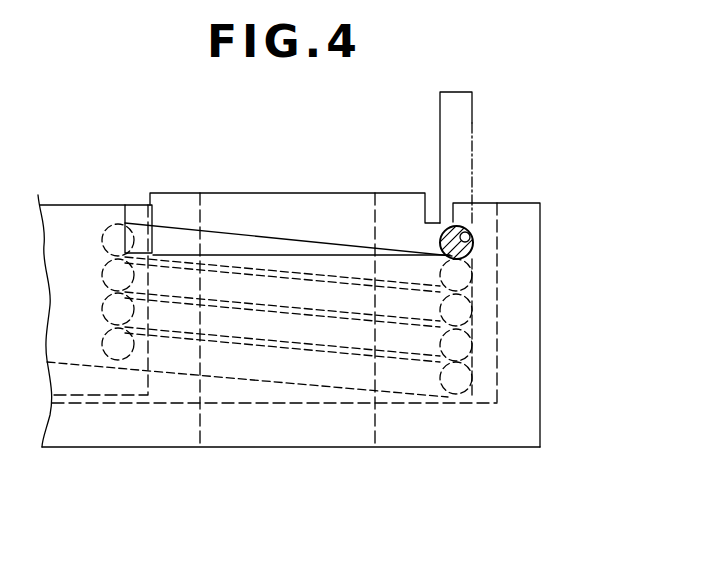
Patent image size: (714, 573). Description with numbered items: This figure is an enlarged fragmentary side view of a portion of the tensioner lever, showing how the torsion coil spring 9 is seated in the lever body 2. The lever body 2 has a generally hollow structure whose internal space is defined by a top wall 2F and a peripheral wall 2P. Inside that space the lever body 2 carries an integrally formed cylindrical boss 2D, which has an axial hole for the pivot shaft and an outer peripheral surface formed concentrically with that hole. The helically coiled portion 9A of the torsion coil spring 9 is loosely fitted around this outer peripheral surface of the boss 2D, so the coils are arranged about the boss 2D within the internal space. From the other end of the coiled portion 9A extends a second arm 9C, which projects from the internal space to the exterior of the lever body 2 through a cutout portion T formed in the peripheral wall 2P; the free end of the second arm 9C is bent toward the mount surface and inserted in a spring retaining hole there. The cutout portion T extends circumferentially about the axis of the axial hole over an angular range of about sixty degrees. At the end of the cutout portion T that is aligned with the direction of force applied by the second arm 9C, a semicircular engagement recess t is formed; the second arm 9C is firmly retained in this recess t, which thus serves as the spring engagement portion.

The lever body 2 is at (540, 400).
The cylindrical boss 2D is at (183, 193).
The top wall 2F is at (187, 432).
The peripheral wall 2P is at (520, 356).
The torsion coil spring 9 is at (470, 259).
The helically coiled portion 9A is at (470, 311).
The second arm 9C is at (472, 123).
The cutout portion T is at (266, 243).
The semicircular engagement recess t is at (470, 243).